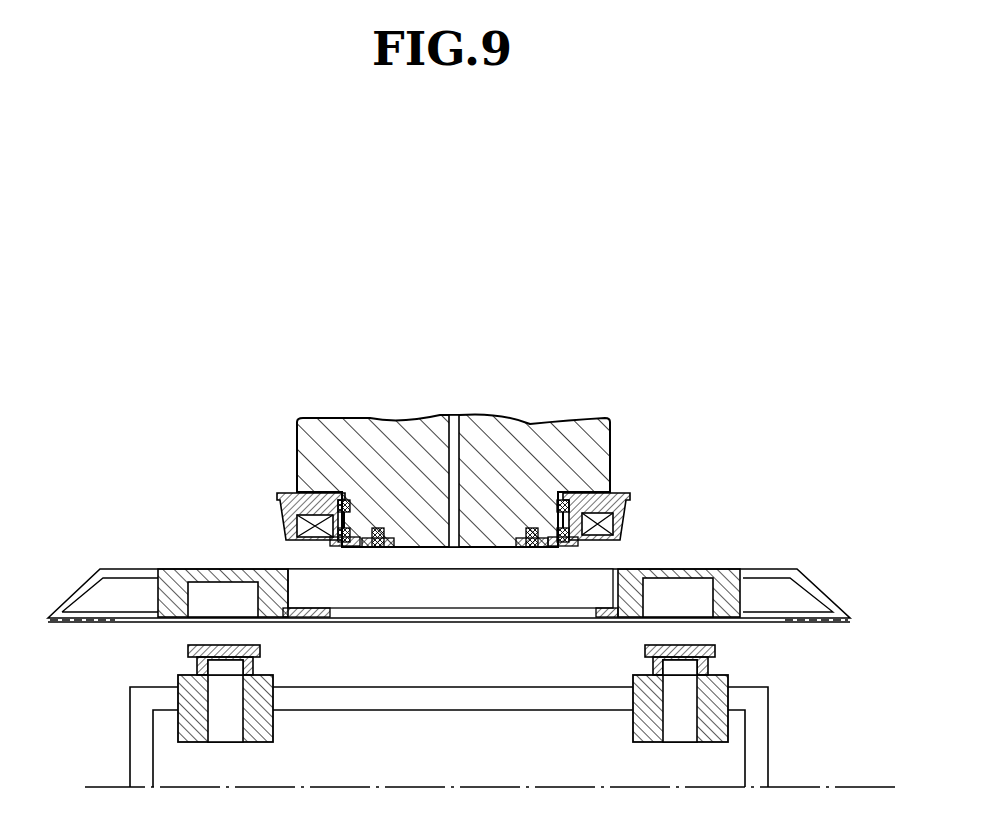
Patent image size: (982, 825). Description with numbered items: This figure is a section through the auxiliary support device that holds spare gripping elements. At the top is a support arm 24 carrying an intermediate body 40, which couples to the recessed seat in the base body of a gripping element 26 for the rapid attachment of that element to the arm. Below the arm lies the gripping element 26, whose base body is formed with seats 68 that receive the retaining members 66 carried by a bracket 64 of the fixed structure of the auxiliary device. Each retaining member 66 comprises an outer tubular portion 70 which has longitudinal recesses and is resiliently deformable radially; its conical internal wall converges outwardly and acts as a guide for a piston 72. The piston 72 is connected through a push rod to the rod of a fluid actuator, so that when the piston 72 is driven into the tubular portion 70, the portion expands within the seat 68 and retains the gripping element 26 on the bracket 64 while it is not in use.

The support arm 24 is at (612, 450).
The intermediate body 40 is at (284, 493).
The gripping element 26 is at (776, 560).
The seat 68 is at (192, 603).
The piston 72 is at (228, 665).
The retaining member 66 is at (262, 660).
The outer tubular portion 70 is at (652, 665).
The bracket 64 is at (727, 763).